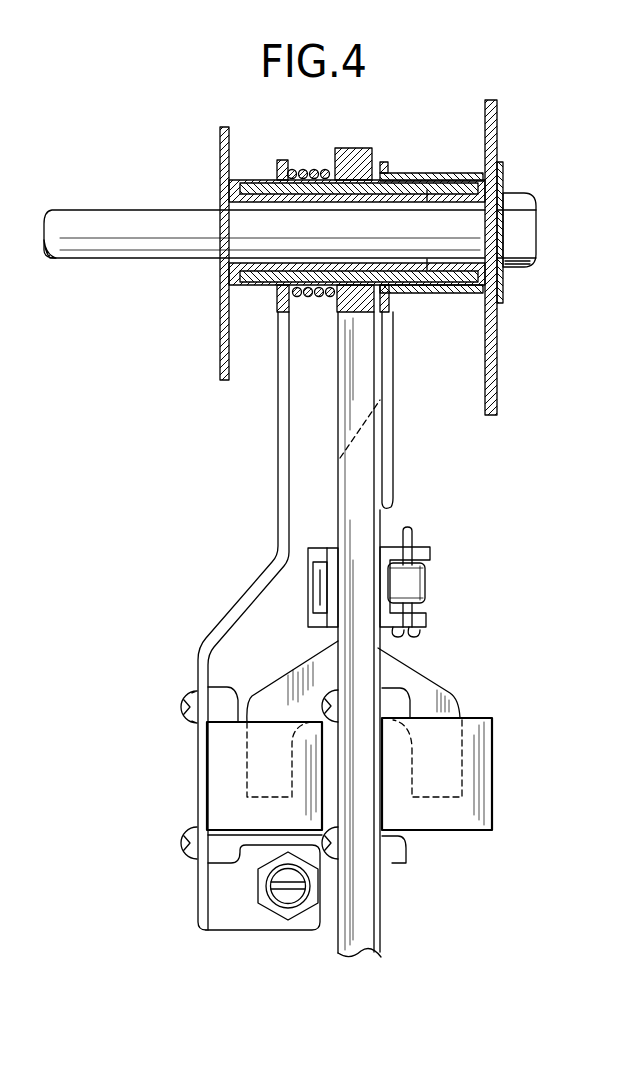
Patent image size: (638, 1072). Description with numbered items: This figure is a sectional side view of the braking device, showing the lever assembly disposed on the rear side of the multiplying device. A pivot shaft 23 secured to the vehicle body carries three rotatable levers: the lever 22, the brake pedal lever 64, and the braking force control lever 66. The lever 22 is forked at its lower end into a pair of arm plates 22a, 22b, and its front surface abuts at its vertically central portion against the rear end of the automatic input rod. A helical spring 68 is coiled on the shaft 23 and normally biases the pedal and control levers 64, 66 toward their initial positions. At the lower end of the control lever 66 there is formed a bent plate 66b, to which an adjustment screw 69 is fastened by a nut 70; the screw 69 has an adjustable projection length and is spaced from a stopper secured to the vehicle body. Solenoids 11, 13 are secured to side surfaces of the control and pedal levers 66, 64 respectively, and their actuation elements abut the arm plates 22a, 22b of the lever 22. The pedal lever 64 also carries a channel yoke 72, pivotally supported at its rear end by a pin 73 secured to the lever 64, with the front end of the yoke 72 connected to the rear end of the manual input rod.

The solenoid 11 is at (218, 778).
The solenoid 13 is at (478, 753).
The lever 22 is at (390, 618).
The arm plate 22a is at (283, 688).
The arm plate 22b is at (447, 700).
The pivot shaft 23 is at (124, 218).
The brake pedal lever 64 is at (373, 931).
The braking force control lever 66 is at (236, 593).
The bent plate 66b is at (222, 923).
The helical spring 68 is at (302, 168).
The adjustment screw 69 is at (283, 898).
The nut 70 is at (295, 921).
The channel yoke 72 is at (428, 549).
The pin 73 is at (427, 588).